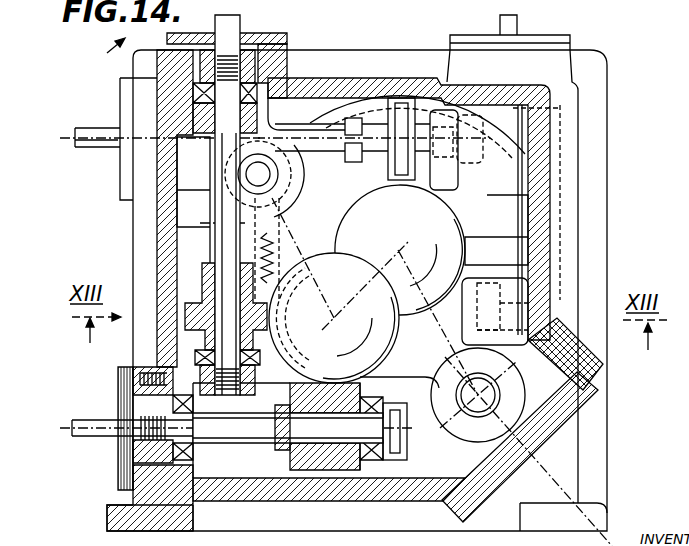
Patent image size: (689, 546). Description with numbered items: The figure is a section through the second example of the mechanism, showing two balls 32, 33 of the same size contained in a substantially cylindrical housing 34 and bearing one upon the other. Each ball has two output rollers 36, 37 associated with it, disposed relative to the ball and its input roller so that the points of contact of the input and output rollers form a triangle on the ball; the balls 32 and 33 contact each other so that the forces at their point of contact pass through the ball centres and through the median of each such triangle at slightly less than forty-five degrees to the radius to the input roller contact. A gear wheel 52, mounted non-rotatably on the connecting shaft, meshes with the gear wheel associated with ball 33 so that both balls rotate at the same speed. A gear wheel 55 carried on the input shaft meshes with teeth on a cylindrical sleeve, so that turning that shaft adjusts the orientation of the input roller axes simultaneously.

The ball 32 is at (334, 341).
The ball 33 is at (390, 227).
The housing 34 is at (134, 233).
The output roller 36 is at (186, 318).
The output roller 37 is at (388, 172).
The gear wheel 52 is at (282, 200).
The gear wheel 55 is at (547, 420).